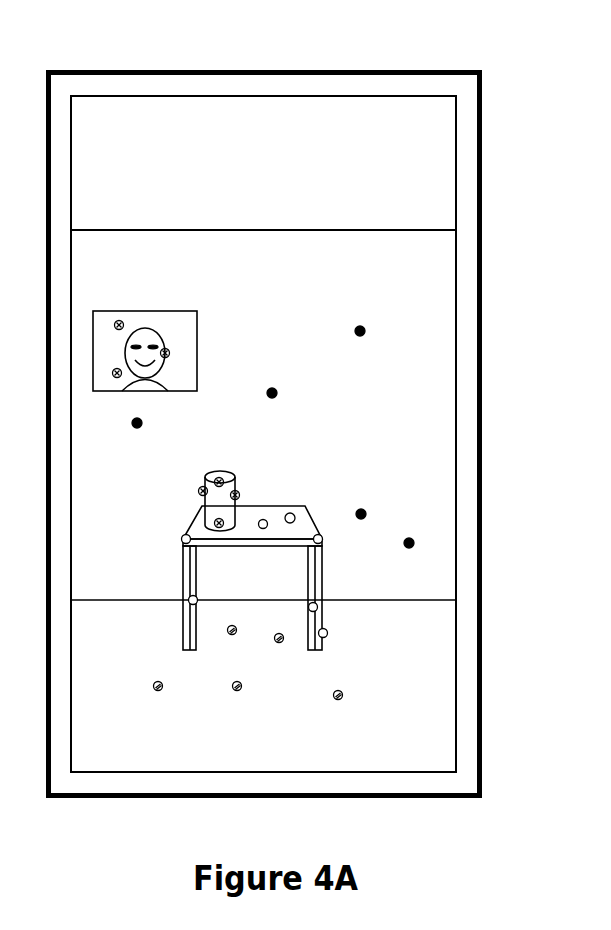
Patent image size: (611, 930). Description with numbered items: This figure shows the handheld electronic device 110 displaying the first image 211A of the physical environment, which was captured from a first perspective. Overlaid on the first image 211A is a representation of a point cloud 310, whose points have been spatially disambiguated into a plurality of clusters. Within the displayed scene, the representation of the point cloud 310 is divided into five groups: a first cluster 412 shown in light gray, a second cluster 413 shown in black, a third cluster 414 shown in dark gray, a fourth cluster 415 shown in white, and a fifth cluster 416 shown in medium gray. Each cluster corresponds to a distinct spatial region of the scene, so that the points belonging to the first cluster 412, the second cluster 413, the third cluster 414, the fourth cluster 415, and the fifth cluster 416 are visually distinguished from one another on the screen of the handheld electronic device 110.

The handheld electronic device 110 is at (305, 70).
The first image 211A is at (443, 294).
The point cloud 310 is at (338, 302).
The first cluster 412 is at (114, 300).
The second cluster 413 is at (295, 368).
The third cluster 414 is at (253, 478).
The fourth cluster 415 is at (328, 518).
The fifth cluster 416 is at (141, 668).